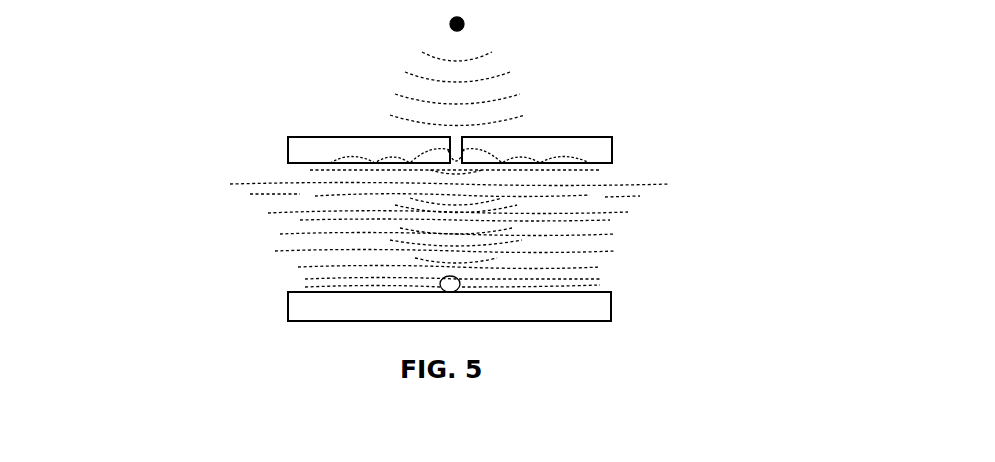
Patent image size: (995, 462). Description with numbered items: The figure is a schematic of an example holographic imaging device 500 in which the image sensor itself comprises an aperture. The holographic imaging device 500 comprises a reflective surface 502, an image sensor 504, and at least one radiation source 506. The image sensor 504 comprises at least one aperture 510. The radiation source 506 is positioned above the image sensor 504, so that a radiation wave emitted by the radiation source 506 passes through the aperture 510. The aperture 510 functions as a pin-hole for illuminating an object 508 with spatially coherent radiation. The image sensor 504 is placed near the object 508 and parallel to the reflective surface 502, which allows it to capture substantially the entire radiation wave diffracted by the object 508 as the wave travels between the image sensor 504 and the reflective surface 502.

The holographic imaging device 500 is at (204, 62).
The reflective surface 502 is at (562, 321).
The image sensor 504 is at (288, 157).
The radiation source 506 is at (450, 23).
The object 508 is at (440, 282).
The aperture 510 is at (448, 136).